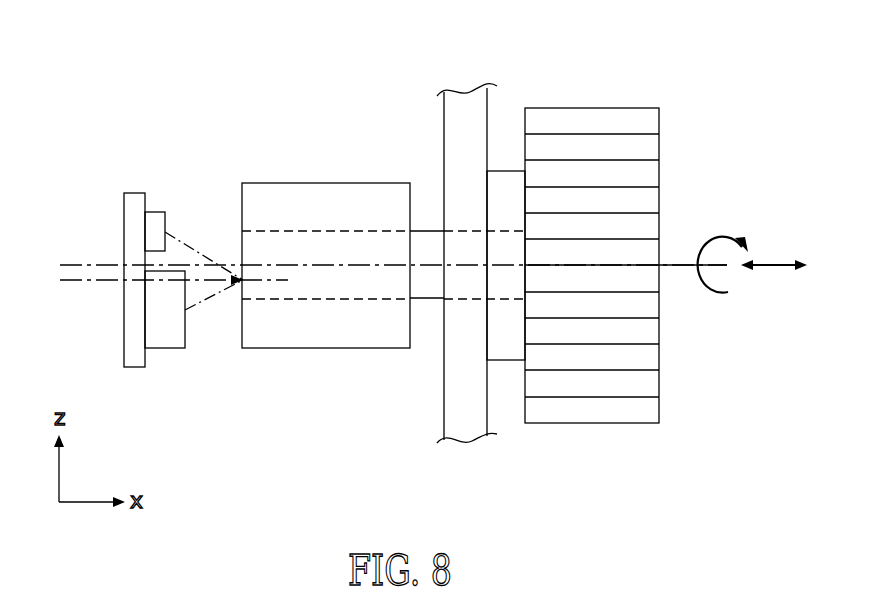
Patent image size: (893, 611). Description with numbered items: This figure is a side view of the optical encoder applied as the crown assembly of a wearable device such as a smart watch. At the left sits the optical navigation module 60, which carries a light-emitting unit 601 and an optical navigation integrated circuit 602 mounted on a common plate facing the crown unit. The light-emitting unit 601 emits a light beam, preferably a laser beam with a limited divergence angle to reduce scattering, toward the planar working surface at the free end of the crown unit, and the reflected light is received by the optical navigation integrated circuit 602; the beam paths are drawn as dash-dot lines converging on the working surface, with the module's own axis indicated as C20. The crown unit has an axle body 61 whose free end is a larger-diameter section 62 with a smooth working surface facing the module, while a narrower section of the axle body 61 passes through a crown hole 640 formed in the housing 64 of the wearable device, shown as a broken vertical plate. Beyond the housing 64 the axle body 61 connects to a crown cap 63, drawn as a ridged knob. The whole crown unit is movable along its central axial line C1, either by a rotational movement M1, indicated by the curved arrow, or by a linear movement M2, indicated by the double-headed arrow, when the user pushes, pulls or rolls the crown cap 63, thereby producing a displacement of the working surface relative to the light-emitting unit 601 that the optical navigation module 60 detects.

The optical navigation module 60 is at (120, 186).
The light-emitting unit 601 is at (153, 212).
The optical navigation integrated circuit 602 is at (163, 350).
The motor housing 62 is at (325, 183).
The axle body 61 is at (428, 242).
The housing 64 is at (463, 115).
The crown hole 640 is at (472, 300).
The crown cap 63 is at (591, 108).
The central axial line C1 is at (686, 265).
The optical axis C20 is at (73, 282).
The rotational movement M1 is at (715, 293).
The linear movement M2 is at (773, 267).